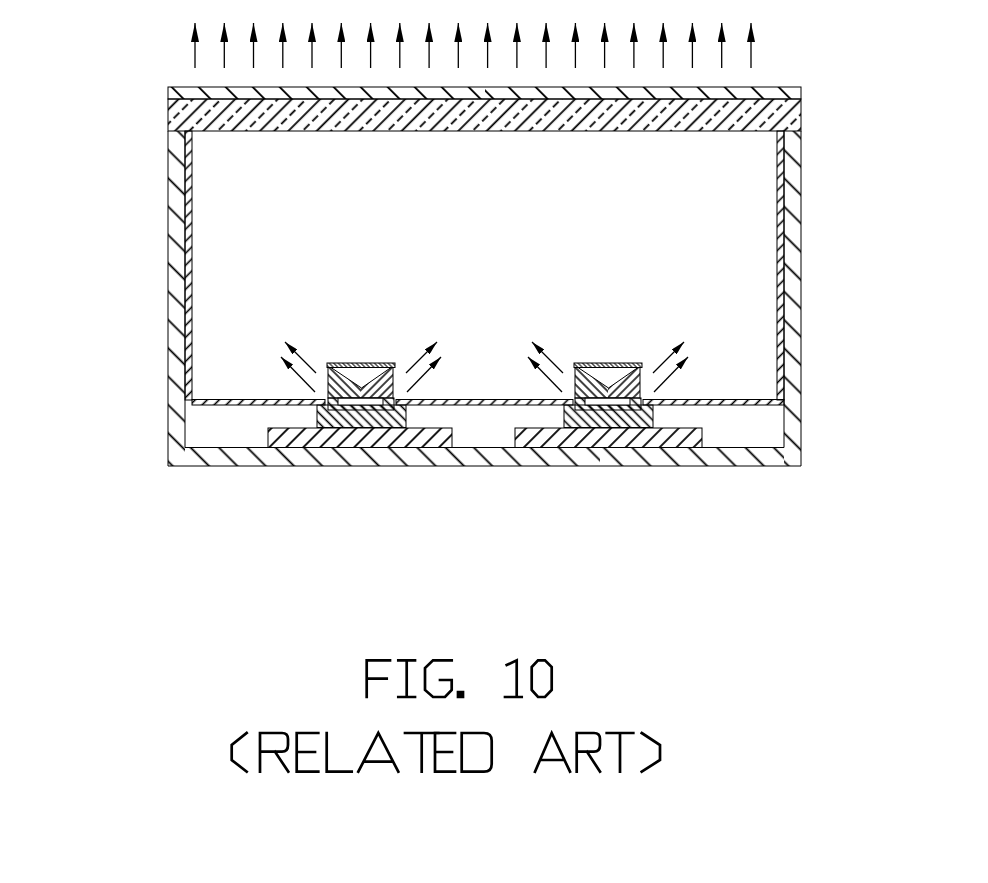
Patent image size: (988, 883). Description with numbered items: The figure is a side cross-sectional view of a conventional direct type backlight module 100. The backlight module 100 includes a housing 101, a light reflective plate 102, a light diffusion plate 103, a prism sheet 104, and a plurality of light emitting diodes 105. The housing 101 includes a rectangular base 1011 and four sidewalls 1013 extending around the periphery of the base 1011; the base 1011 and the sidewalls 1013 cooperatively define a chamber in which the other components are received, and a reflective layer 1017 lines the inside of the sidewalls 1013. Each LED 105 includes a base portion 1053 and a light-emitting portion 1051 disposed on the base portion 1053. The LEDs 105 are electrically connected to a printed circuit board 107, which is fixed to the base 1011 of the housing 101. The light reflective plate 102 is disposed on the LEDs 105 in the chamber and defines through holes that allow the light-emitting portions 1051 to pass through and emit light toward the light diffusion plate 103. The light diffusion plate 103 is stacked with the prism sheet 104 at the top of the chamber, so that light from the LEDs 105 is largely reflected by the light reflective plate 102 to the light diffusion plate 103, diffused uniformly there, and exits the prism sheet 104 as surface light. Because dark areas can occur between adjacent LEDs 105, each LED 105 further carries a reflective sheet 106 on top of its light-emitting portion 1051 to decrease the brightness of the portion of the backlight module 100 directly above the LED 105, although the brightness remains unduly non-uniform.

The backlight module 100 is at (147, 55).
The housing 101 is at (454, 316).
The base 1011 is at (218, 453).
The sidewalls 1013 is at (178, 345).
The reflective layer 1017 is at (532, 265).
The light reflective plate 102 is at (705, 402).
The light diffusion plate 103 is at (790, 116).
The prism sheet 104 is at (770, 88).
The light emitting diode 105 is at (448, 485).
The light-emitting portion 1051 is at (330, 388).
The base portion 1053 is at (340, 408).
The reflective sheet 106 is at (351, 363).
The printed circuit board 107 is at (604, 436).